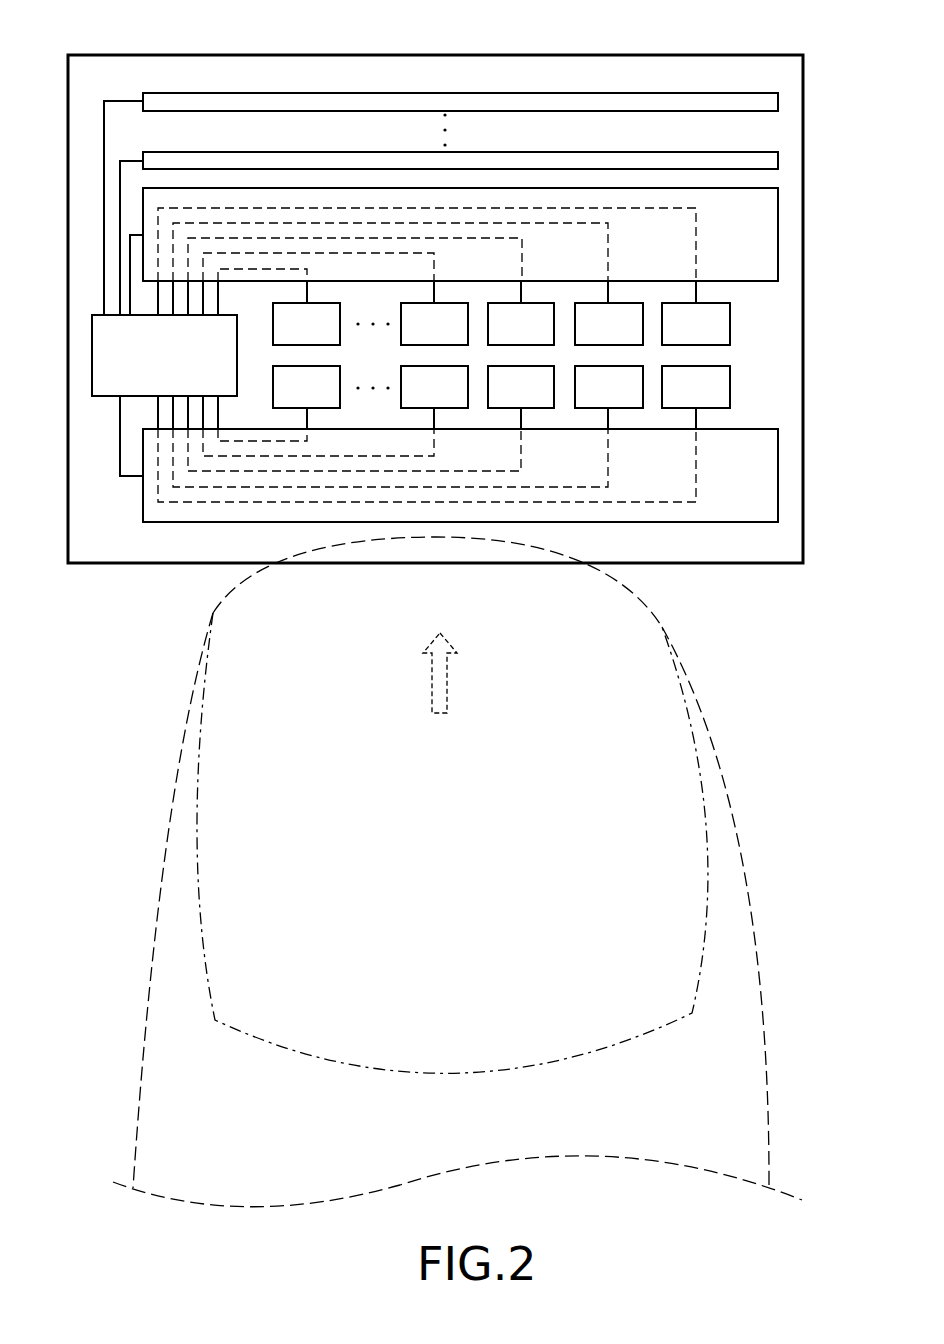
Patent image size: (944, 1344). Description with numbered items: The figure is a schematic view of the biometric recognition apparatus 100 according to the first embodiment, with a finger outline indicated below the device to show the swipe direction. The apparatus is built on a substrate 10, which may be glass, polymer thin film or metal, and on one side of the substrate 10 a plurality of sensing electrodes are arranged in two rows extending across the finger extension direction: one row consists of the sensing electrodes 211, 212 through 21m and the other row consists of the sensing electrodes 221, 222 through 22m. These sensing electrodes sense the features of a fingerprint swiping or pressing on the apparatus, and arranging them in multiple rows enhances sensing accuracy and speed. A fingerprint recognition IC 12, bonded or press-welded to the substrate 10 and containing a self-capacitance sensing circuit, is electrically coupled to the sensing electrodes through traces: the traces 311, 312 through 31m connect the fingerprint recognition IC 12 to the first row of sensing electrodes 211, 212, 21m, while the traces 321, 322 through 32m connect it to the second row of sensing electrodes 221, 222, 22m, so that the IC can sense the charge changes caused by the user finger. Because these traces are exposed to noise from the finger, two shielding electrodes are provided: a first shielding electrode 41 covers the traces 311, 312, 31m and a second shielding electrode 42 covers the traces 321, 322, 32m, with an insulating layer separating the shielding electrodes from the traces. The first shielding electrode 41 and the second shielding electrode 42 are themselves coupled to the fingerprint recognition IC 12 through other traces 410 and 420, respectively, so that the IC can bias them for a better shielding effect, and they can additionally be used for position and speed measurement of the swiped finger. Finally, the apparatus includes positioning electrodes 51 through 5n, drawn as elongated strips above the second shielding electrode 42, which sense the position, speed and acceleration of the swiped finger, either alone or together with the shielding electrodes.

The biometric recognition apparatus 100 is at (354, 37).
The substrate 10 is at (712, 60).
The positioning electrode 51 is at (534, 100).
The positioning electrode 5n is at (610, 160).
The second shielding electrode 42 is at (757, 232).
The first shielding electrode 41 is at (758, 510).
The trace 420 is at (130, 295).
The trace 410 is at (118, 453).
The fingerprint recognition IC 12 is at (105, 375).
The trace 32m is at (312, 292).
The trace 31m is at (312, 408).
The trace 322 is at (608, 293).
The trace 321 is at (698, 290).
The trace 312 is at (609, 418).
The trace 311 is at (698, 418).
The sensing electrode 22m is at (330, 337).
The sensing electrode 21m is at (330, 400).
The sensing electrode 222 is at (630, 337).
The sensing electrode 221 is at (717, 337).
The sensing electrode 212 is at (630, 400).
The sensing electrode 211 is at (717, 400).